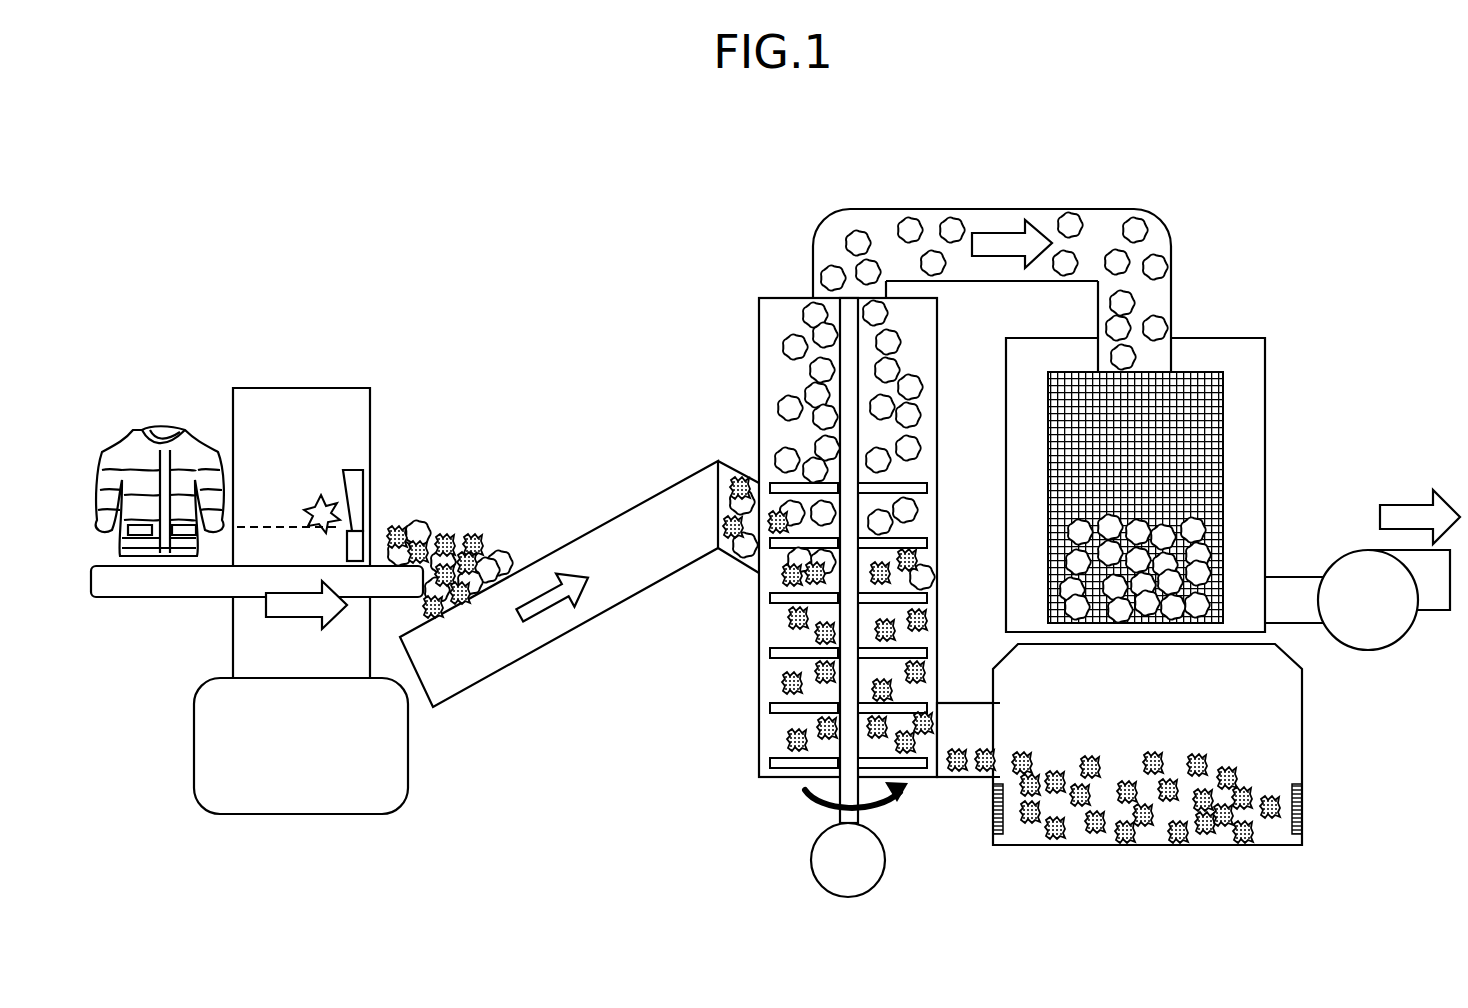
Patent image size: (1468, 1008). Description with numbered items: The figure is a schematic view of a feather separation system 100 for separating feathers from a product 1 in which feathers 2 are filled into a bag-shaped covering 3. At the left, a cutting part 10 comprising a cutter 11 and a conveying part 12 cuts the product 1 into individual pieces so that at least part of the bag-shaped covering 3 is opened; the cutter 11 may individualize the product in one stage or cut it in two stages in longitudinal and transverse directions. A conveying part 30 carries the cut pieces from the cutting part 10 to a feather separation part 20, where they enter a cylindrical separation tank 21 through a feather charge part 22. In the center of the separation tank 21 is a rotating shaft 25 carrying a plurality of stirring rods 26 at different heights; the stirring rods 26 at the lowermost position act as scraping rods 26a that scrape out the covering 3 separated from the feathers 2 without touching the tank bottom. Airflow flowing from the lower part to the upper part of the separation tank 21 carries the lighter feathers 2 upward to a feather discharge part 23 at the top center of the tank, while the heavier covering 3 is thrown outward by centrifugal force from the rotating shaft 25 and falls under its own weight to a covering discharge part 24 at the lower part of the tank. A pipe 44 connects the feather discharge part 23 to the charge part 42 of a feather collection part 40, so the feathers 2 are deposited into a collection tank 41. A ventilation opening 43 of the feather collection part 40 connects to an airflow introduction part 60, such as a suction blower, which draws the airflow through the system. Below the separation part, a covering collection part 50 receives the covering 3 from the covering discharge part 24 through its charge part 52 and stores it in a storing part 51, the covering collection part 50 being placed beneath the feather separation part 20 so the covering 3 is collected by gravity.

The feather separation system 100 is at (338, 192).
The product 1 is at (157, 428).
The feathers 2 is at (420, 522).
The covering 3 is at (397, 527).
The cutting part 10 is at (286, 382).
The cutter 11 is at (347, 468).
The conveying part 12 is at (120, 598).
The feather separation part 20 is at (780, 292).
The separation tank 21 is at (759, 378).
The feather charge part 22 is at (735, 565).
The feather discharge part 23 is at (845, 209).
The covering discharge part 24 is at (953, 777).
The rotating shaft 25 is at (840, 433).
The stirring rods 26 is at (933, 527).
The scraping rods 26a is at (787, 768).
The conveying part 30 is at (647, 493).
The feather collection part 40 is at (1249, 333).
The collection tank 41 is at (1265, 377).
The charge part 42 is at (1172, 302).
The ventilation opening 43 is at (1267, 597).
The pipe 44 is at (995, 209).
The covering collection part 50 is at (1310, 763).
The storing part 51 is at (1302, 690).
The charge part 52 is at (967, 703).
The airflow introduction part 60 is at (1340, 552).